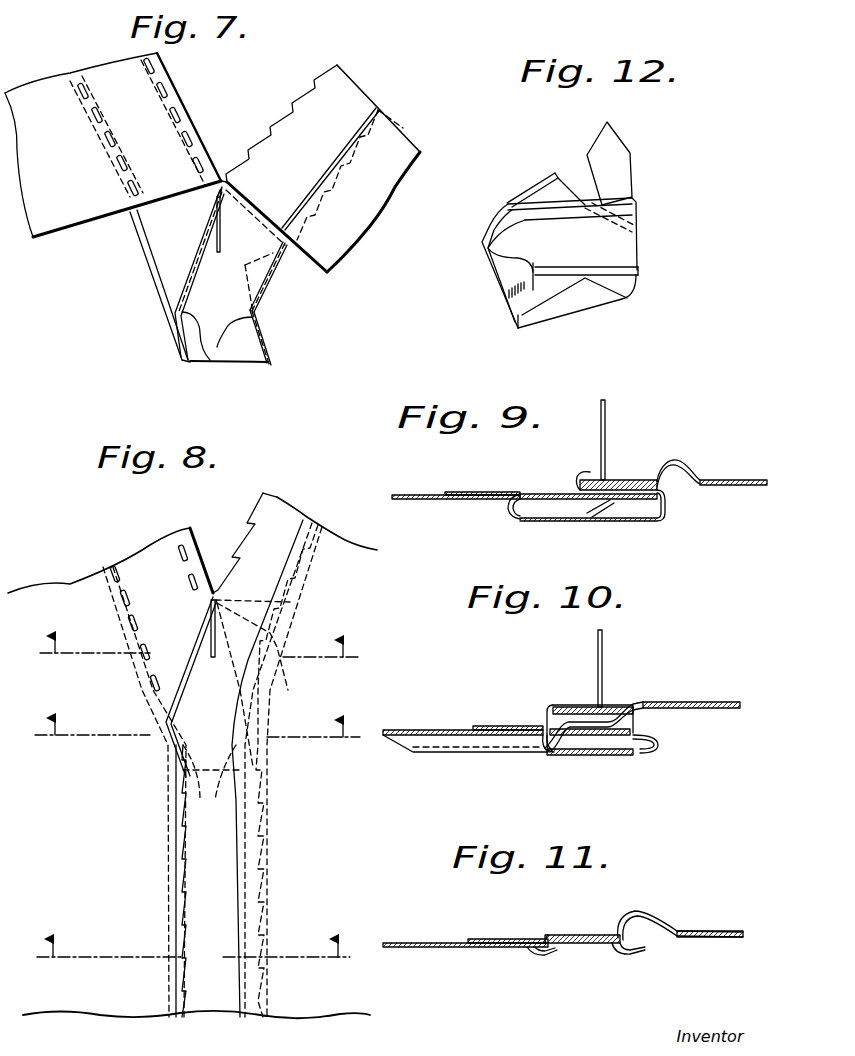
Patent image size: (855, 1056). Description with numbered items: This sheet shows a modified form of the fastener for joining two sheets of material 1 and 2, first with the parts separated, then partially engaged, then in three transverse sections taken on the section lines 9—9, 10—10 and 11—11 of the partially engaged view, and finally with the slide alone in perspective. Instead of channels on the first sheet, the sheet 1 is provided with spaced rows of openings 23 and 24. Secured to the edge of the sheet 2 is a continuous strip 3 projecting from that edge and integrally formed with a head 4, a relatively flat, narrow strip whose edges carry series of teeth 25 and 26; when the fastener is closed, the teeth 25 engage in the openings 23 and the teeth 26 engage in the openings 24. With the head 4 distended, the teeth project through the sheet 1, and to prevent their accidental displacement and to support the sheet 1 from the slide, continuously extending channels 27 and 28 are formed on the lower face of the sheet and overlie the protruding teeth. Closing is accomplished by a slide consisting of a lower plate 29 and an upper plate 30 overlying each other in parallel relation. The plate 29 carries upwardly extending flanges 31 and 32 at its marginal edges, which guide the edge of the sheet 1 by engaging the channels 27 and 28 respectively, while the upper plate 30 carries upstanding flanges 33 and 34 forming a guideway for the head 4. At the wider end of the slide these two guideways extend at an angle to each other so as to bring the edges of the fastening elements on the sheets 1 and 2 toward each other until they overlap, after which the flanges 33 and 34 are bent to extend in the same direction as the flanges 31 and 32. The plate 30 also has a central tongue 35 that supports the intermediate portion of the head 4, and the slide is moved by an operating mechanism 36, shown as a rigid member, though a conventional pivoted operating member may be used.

In FIG. 7, the sheet of material 1 is at (125, 156).
In FIG. 8, the sheet of material 1 is at (121, 768).
In FIG. 9, the sheet of material 1 is at (430, 500).
In FIG. 11, the sheet of material 1 is at (453, 948).
In FIG. 7, the sheet of material 2 is at (340, 161).
In FIG. 8, the sheet of material 2 is at (295, 543).
In FIG. 9, the sheet of material 2 is at (671, 464).
In FIG. 11, the sheet of material 2 is at (680, 931).
In FIG. 9, the continuous strip 3 is at (687, 467).
In FIG. 7, the head 4 is at (342, 82).
In FIG. 9, the head 4 is at (610, 489).
In FIG. 10, the head 4 is at (573, 728).
In FIG. 11, the head 4 is at (578, 938).
In FIG. 7, the openings 23 is at (187, 140).
In FIG. 8, the openings 23 is at (182, 550).
In FIG. 7, the openings 24 is at (120, 157).
In FIG. 8, the openings 24 is at (120, 575).
In FIG. 7, the teeth 25 is at (403, 128).
In FIG. 11, the teeth 25 is at (647, 947).
In FIG. 7, the teeth 26 is at (290, 103).
In FIG. 11, the teeth 26 is at (545, 943).
In FIG. 9, the channel 27 is at (517, 519).
In FIG. 10, the channel 27 is at (542, 757).
In FIG. 11, the channel 27 is at (542, 956).
In FIG. 9, the channel 28 is at (613, 519).
In FIG. 10, the channel 28 is at (628, 758).
In FIG. 11, the channel 28 is at (623, 951).
In FIG. 7, the plate 29 is at (162, 235).
In FIG. 12, the plate 29 is at (555, 190).
In FIG. 8, the plate 29 is at (144, 791).
In FIG. 7, the plate 30 is at (220, 283).
In FIG. 12, the plate 30 is at (564, 223).
In FIG. 8, the plate 30 is at (228, 768).
In FIG. 9, the plate 30 is at (616, 505).
In FIG. 7, the flange 31 is at (180, 360).
In FIG. 12, the flange 31 is at (483, 248).
In FIG. 8, the flange 31 is at (170, 755).
In FIG. 9, the flange 31 is at (530, 493).
In FIG. 7, the flange 32 is at (268, 338).
In FIG. 12, the flange 32 is at (537, 307).
In FIG. 8, the flange 32 is at (273, 762).
In FIG. 7, the flange 33 is at (217, 192).
In FIG. 12, the flange 33 is at (638, 201).
In FIG. 7, the flange 34 is at (277, 280).
In FIG. 12, the flange 34 is at (643, 273).
In FIG. 8, the flange 34 is at (268, 688).
In FIG. 7, the central tongue 35 is at (210, 343).
In FIG. 12, the central tongue 35 is at (503, 253).
In FIG. 8, the central tongue 35 is at (216, 745).
In FIG. 10, the central tongue 35 is at (610, 708).
In FIG. 7, the operating mechanism 36 is at (223, 237).
In FIG. 12, the operating mechanism 36 is at (623, 155).
In FIG. 8, the operating mechanism 36 is at (207, 622).
In FIG. 9, the operating mechanism 36 is at (607, 420).
In FIG. 10, the operating mechanism 36 is at (603, 645).
In FIG. 8, the section line 9— 9 is at (200, 663).
In FIG. 8, the section line 10— 10 is at (197, 746).
In FIG. 8, the section line 11— 11 is at (193, 965).